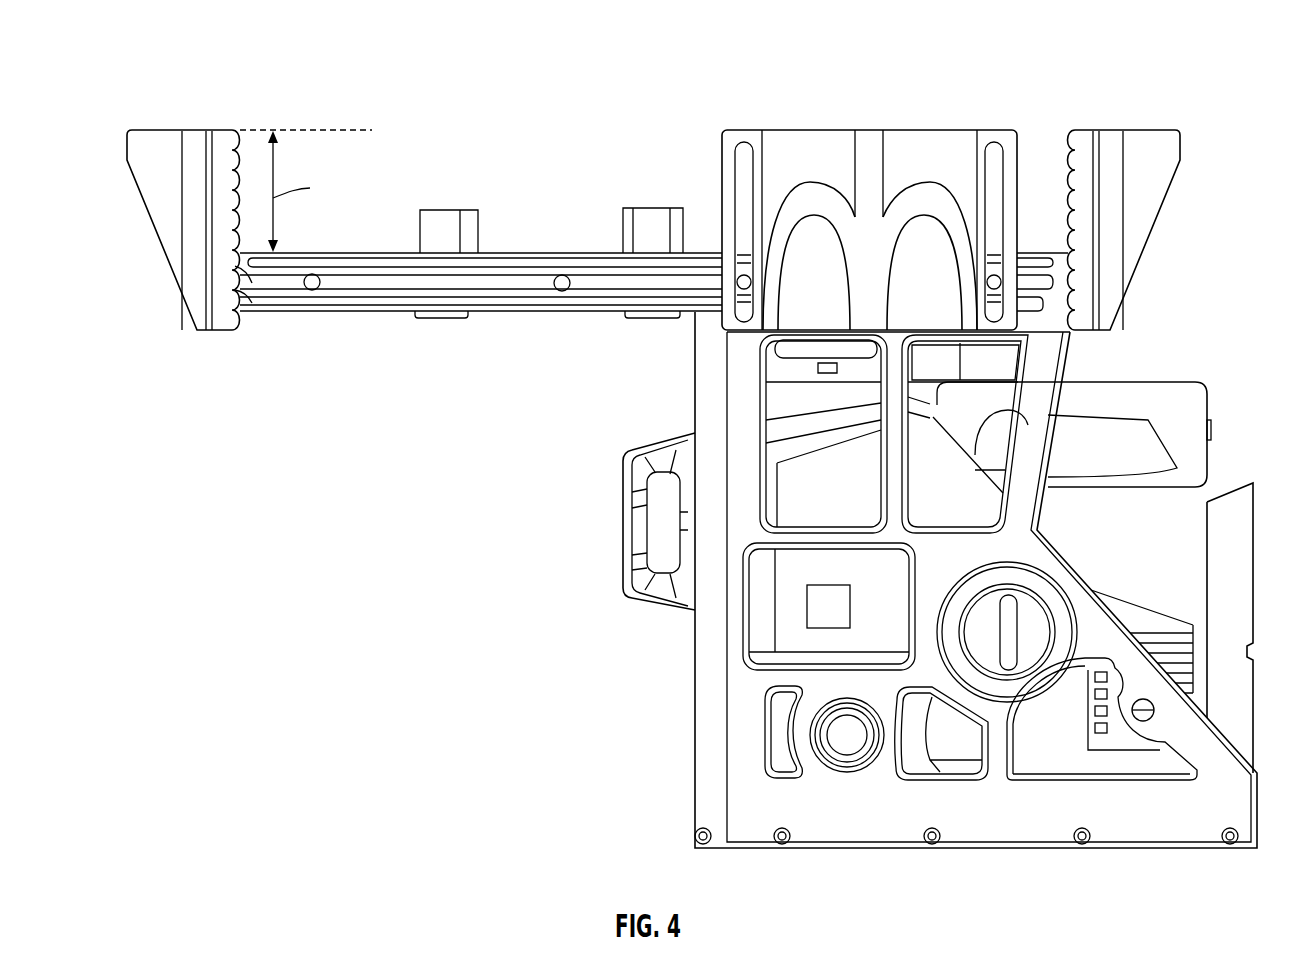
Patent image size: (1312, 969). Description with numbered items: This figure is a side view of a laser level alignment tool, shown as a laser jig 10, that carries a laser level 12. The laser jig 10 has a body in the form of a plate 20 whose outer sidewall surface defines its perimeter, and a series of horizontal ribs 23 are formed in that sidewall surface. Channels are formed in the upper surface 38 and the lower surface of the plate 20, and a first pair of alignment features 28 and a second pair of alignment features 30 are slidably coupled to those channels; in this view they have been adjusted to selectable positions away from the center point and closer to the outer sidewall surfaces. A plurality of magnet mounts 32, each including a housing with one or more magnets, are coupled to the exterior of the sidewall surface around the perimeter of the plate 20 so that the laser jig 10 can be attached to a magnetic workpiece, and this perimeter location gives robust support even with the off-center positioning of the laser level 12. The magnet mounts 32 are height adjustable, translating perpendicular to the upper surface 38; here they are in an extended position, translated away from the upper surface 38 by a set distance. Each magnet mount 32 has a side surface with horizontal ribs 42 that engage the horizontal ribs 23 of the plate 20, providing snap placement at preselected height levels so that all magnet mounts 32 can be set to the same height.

The laser jig 10 is at (1260, 110).
The laser level 12 is at (1225, 408).
The plate 20 is at (542, 325).
The horizontal ribs 23 is at (240, 268).
The first pair of alignment features 28 is at (645, 226).
The second pair of alignment features 30 is at (437, 226).
The magnet mounts 32 is at (936, 150).
The upper surface 38 is at (584, 247).
The horizontal ribs 42 is at (235, 260).